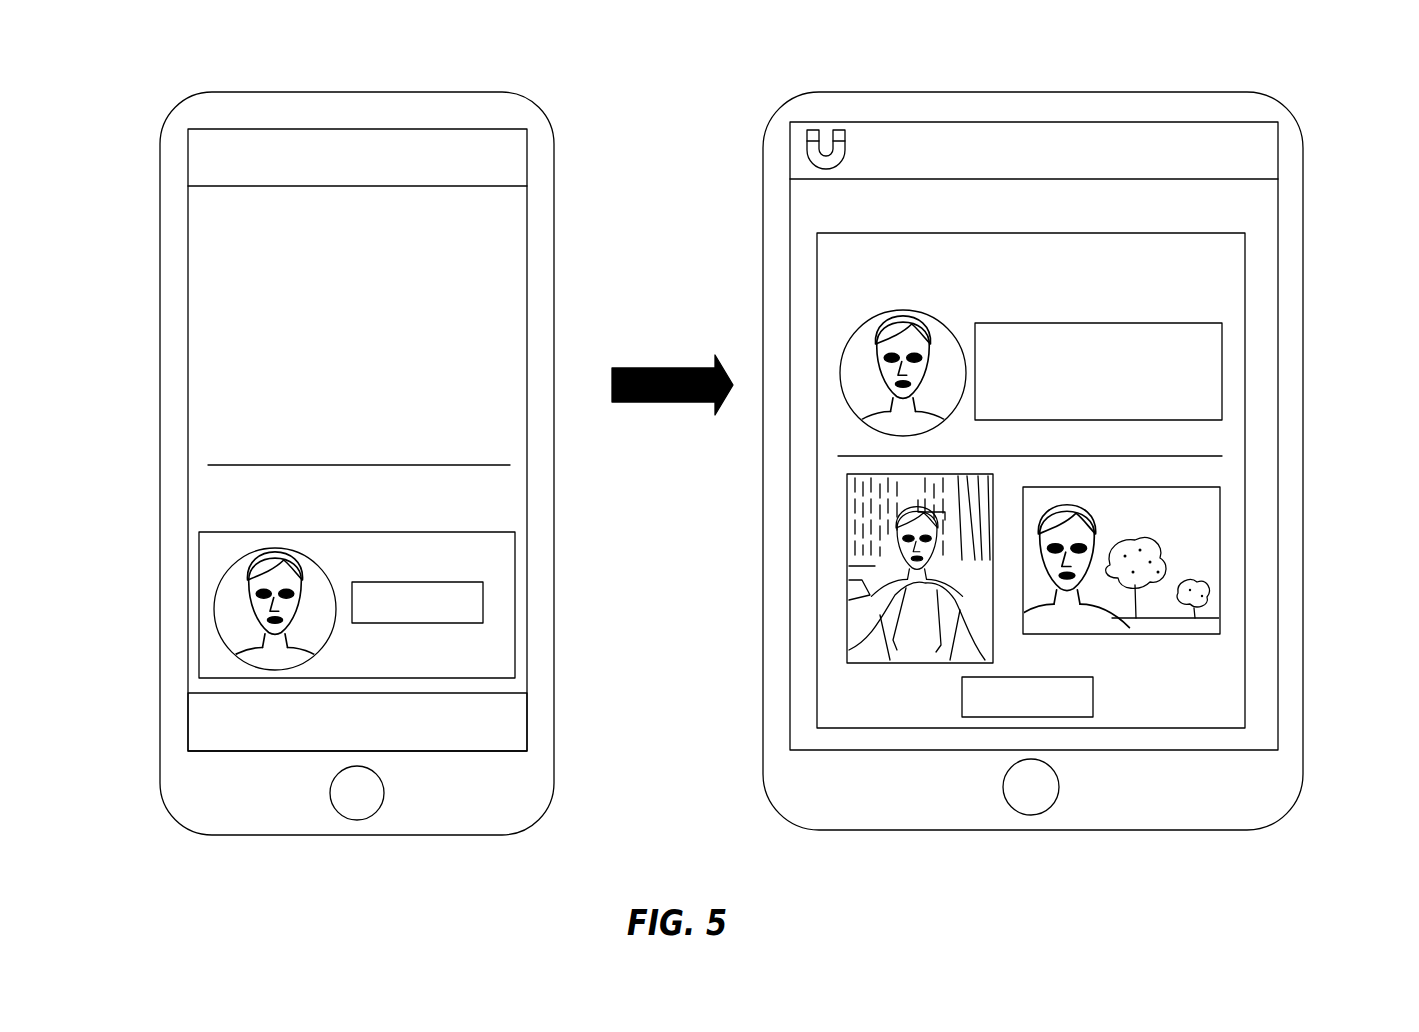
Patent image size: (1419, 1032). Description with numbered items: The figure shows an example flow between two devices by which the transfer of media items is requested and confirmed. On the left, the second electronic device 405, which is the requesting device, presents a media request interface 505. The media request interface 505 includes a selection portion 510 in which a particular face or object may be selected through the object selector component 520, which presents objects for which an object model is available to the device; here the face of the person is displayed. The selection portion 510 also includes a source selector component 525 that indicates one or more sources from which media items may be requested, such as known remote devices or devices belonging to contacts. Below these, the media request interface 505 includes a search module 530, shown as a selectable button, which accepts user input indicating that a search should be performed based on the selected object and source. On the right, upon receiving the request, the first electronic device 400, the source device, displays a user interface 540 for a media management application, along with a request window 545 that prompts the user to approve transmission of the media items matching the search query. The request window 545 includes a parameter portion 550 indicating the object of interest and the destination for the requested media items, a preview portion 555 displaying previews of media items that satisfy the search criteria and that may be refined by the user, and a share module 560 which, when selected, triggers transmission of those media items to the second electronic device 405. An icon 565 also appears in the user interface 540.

The second electronic device 405 is at (425, 92).
The media request interface 505 is at (528, 246).
The selection portion 510 is at (512, 507).
The object selector component 520 is at (222, 586).
The source selector component 525 is at (483, 604).
The search module 530 is at (490, 733).
The first electronic device 400 is at (925, 92).
The user interface 540 is at (1278, 228).
The application icon 565 is at (800, 148).
The request window 545 is at (1242, 352).
The parameter portion 550 is at (838, 327).
The preview portion 555 is at (1229, 555).
The share module 560 is at (1093, 703).